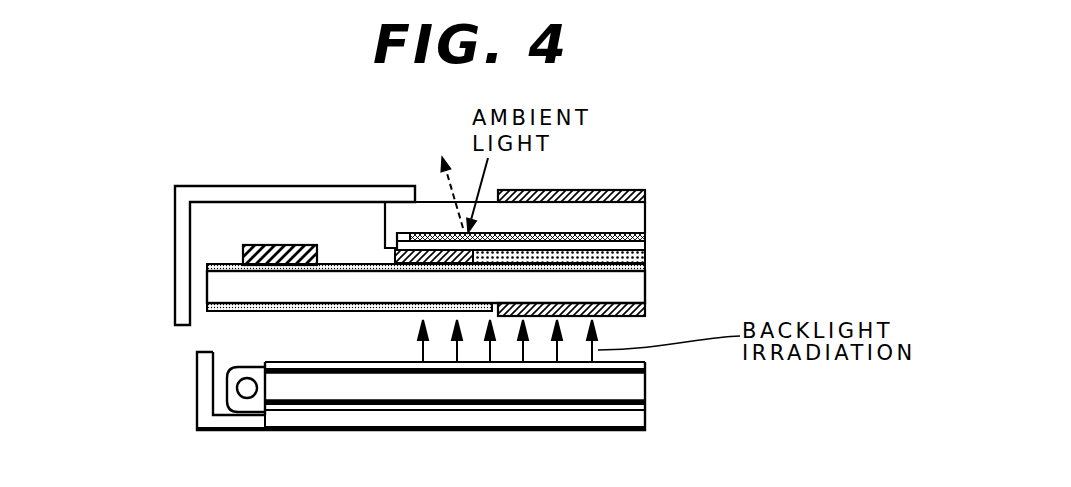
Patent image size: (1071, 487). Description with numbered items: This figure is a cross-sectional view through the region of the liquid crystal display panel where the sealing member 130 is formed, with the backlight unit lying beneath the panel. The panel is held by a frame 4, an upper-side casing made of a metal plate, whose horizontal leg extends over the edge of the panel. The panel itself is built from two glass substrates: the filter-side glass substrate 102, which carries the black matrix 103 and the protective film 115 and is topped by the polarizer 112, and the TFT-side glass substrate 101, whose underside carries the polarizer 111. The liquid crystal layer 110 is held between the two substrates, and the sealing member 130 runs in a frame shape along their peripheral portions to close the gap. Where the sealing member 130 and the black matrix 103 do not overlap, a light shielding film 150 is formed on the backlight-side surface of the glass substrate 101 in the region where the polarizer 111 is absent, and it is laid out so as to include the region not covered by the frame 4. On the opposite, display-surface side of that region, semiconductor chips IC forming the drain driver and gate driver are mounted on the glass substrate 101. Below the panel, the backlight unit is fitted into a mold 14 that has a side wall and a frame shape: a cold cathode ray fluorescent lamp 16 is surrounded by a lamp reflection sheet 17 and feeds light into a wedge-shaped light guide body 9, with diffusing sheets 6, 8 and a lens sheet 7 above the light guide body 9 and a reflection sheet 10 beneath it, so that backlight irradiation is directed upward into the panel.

The frame 4 is at (175, 224).
The semiconductor chips IC is at (268, 244).
The sealing member 130 is at (399, 249).
The polarizer 112 is at (647, 191).
The glass substrate 102 is at (638, 217).
The black matrix 103 is at (644, 237).
The protective film 115 is at (644, 246).
The liquid crystal layer 110 is at (638, 257).
The glass substrate 101 is at (638, 283).
The light shielding film 150 is at (208, 309).
The polarizer 111 is at (644, 312).
The diffusing sheet 6 is at (512, 381).
The lens sheet 7 is at (512, 381).
The diffusing sheet 8 is at (643, 364).
The light guide body 9 is at (645, 388).
The reflection sheet 10 is at (647, 408).
The mold 14 is at (635, 424).
The lamp reflection sheet 17 is at (230, 383).
The cold cathode ray fluorescent lamp 16 is at (243, 393).